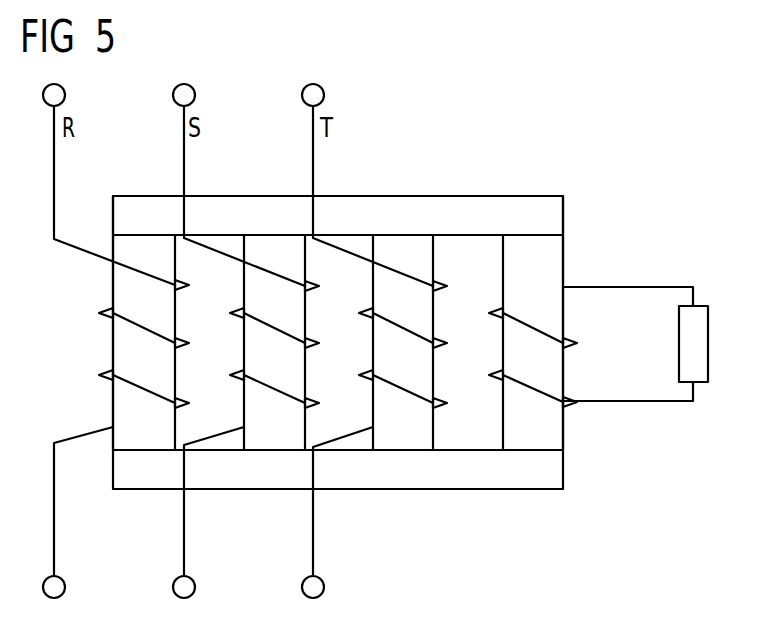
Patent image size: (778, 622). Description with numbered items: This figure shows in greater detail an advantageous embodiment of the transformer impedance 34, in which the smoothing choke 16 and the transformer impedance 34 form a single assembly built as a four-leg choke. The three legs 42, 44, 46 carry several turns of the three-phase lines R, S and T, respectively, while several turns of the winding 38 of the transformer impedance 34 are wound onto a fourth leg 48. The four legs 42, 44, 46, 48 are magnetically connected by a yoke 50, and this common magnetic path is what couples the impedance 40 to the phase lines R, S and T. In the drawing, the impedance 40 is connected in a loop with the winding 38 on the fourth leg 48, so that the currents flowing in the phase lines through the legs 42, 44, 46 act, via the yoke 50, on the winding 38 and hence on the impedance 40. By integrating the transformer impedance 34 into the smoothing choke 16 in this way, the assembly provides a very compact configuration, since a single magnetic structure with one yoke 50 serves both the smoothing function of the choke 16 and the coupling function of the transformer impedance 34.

The smoothing choke 16 is at (215, 331).
The yoke 50 is at (438, 215).
The leg 42 is at (145, 423).
The leg 44 is at (275, 422).
The leg 46 is at (403, 423).
The fourth leg 48 is at (533, 423).
The transformer impedance 34 is at (663, 344).
The impedance 40 is at (703, 353).
The winding 38 is at (543, 393).